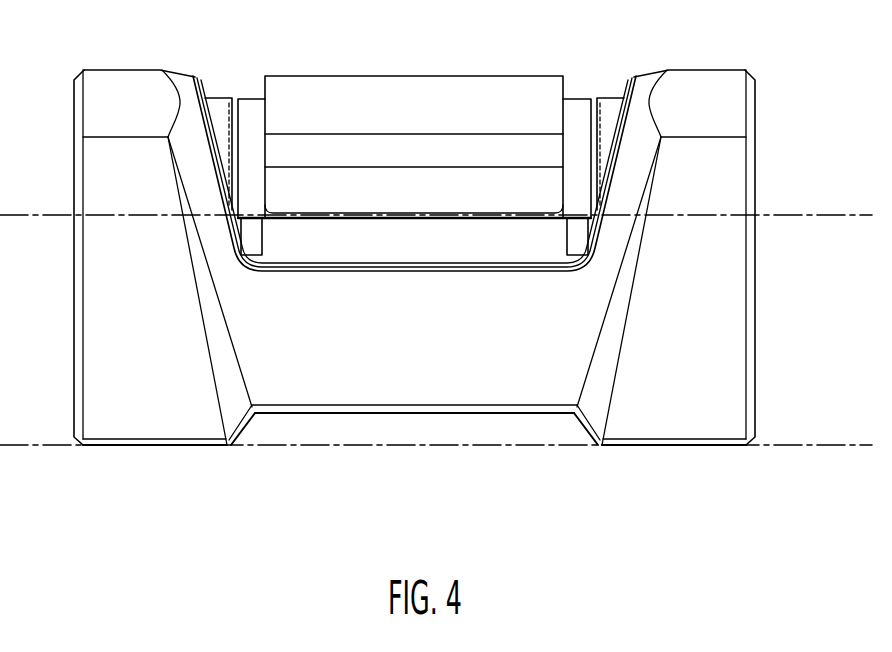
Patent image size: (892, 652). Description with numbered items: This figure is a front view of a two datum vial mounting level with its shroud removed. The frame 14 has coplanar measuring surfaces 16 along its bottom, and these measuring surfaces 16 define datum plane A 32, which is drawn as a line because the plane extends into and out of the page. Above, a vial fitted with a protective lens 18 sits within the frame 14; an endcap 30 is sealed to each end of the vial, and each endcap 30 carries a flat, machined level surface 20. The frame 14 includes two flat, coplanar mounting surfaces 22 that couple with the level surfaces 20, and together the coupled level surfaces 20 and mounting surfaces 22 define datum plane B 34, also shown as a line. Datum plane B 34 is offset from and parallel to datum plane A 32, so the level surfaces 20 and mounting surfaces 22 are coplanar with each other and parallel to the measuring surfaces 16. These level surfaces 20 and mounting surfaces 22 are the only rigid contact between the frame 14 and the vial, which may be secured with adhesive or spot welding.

The frame 14 is at (108, 310).
The measuring surfaces 16 is at (128, 448).
The protective lens 18 is at (420, 87).
The level surface 20 is at (250, 217).
The mounting surface 22 is at (585, 220).
The endcap 30 is at (253, 103).
The datum plane A 32 is at (783, 445).
The datum plane B 34 is at (812, 213).